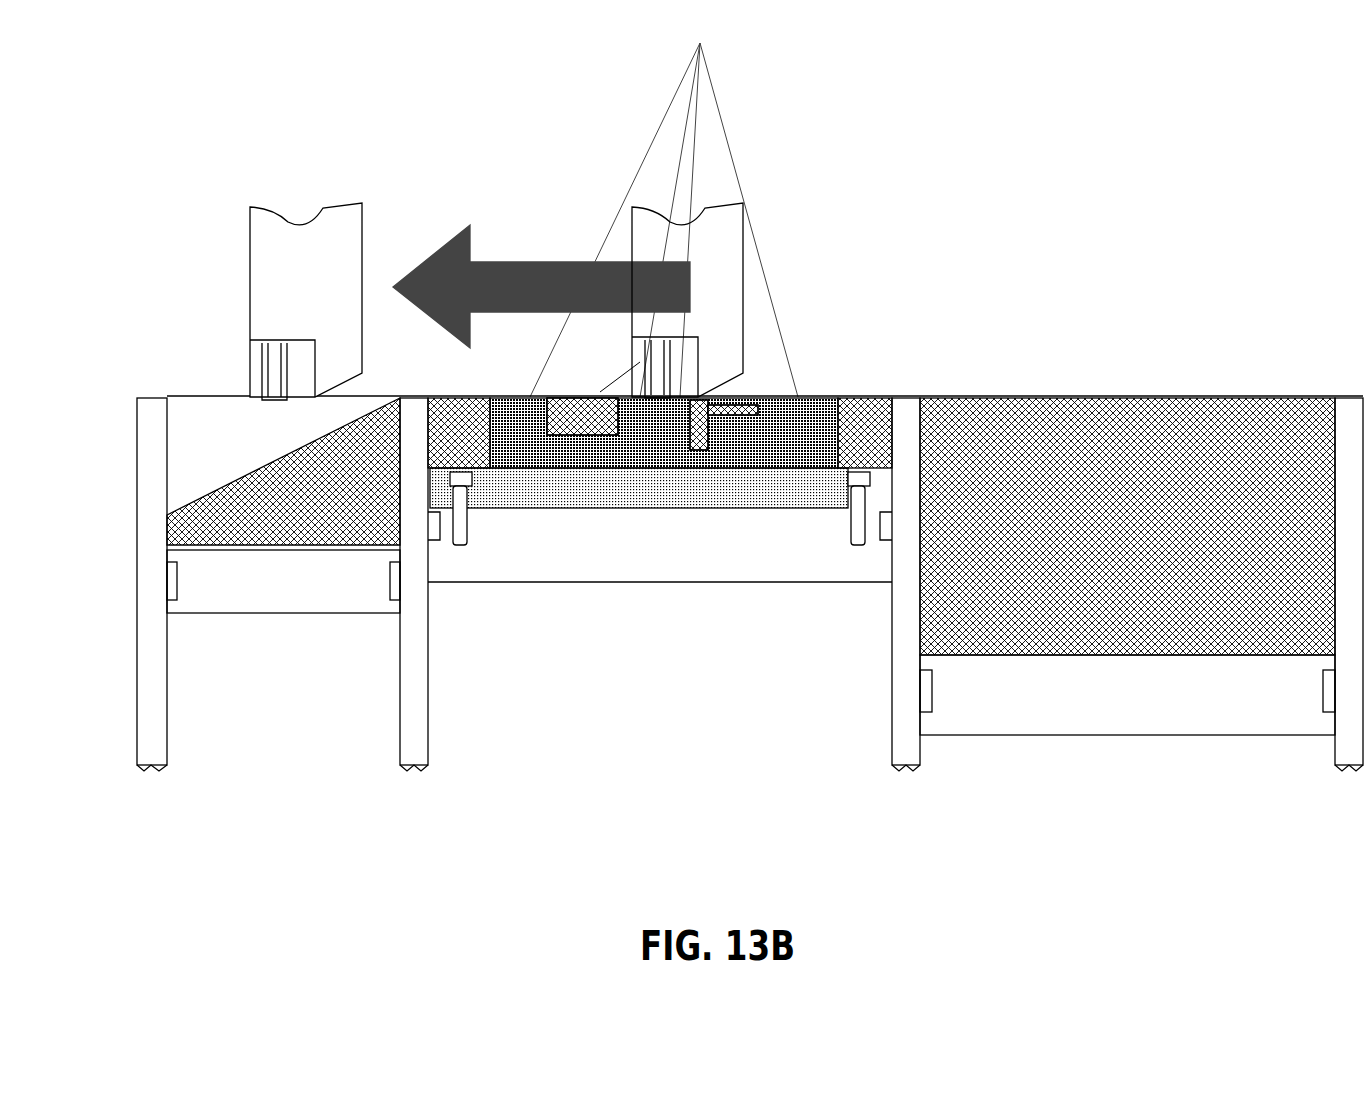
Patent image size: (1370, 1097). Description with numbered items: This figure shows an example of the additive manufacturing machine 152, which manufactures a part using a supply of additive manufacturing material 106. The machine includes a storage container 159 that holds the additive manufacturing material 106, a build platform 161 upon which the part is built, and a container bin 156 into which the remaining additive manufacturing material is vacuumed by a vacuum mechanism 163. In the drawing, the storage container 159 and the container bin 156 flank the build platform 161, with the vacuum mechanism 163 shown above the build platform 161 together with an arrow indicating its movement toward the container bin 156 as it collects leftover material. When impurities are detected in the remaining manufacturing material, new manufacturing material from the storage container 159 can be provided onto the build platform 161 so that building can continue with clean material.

The additive manufacturing machine 152 is at (281, 82).
The vacuum mechanism 163 is at (260, 200).
The container bin 156 is at (285, 705).
The build platform 161 is at (650, 684).
The additive manufacturing material 106 is at (1115, 380).
The storage container 159 is at (1128, 802).